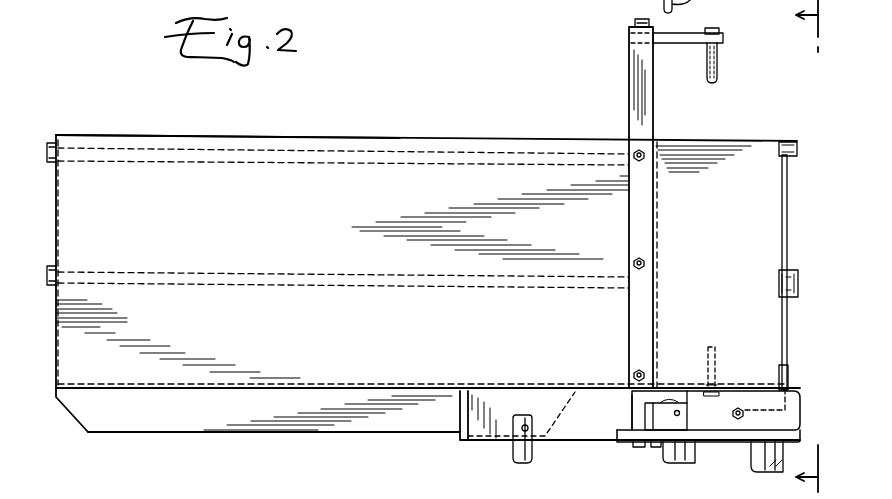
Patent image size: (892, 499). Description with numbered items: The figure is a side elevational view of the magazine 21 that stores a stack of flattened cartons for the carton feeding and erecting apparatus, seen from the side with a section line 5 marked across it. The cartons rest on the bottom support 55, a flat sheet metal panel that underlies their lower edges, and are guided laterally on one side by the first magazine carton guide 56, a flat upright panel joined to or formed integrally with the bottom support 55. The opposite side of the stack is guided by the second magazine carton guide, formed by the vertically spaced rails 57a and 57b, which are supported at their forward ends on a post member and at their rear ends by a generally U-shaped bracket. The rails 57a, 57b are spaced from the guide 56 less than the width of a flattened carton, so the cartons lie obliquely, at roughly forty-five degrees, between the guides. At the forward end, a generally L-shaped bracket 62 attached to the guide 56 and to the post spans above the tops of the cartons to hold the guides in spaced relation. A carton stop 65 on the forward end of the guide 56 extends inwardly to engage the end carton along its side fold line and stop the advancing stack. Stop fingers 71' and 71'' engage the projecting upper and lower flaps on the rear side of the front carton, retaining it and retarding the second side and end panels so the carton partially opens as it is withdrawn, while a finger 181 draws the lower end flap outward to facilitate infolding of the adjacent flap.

The magazine 21 is at (439, 134).
The first magazine carton guide 56 is at (165, 136).
The rail 57a is at (322, 150).
The rail 57b is at (252, 272).
The bottom support 55 is at (276, 392).
The L-shaped bracket 62 is at (632, 100).
The stop finger 71' is at (738, 55).
The carton stop 65 is at (790, 141).
The stop finger 71'' is at (712, 356).
The finger 181 is at (792, 376).
The section line 5- 5 is at (818, 246).